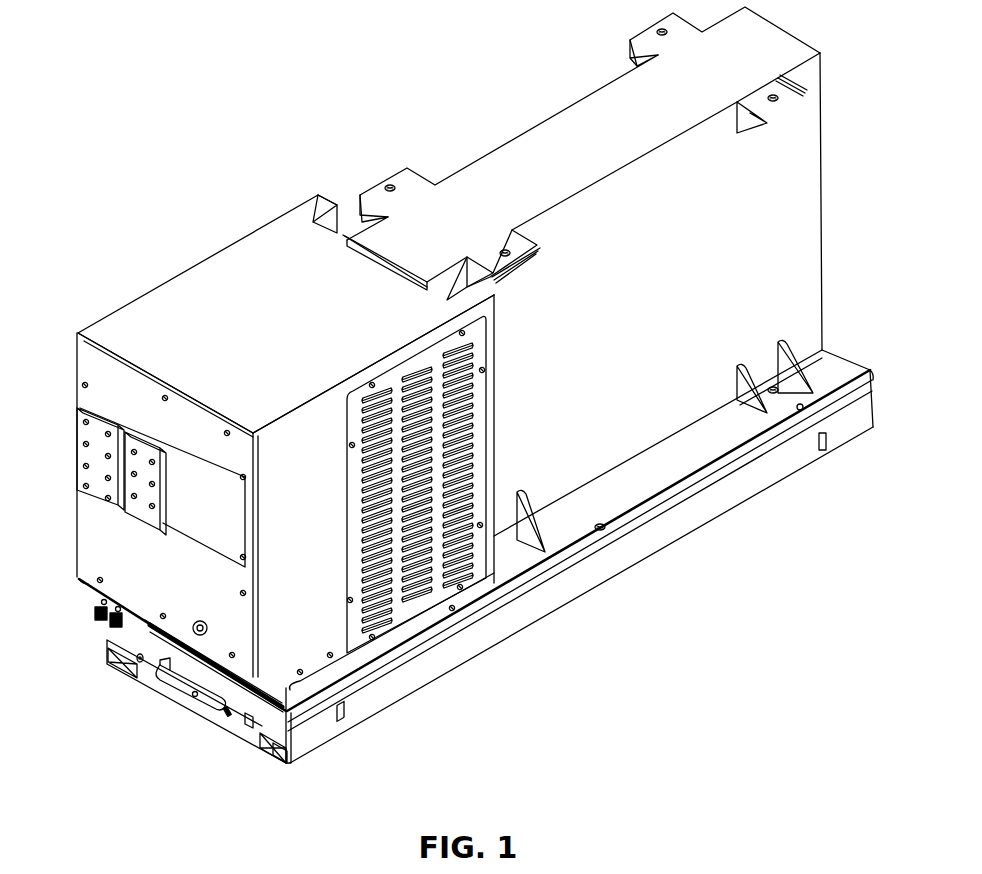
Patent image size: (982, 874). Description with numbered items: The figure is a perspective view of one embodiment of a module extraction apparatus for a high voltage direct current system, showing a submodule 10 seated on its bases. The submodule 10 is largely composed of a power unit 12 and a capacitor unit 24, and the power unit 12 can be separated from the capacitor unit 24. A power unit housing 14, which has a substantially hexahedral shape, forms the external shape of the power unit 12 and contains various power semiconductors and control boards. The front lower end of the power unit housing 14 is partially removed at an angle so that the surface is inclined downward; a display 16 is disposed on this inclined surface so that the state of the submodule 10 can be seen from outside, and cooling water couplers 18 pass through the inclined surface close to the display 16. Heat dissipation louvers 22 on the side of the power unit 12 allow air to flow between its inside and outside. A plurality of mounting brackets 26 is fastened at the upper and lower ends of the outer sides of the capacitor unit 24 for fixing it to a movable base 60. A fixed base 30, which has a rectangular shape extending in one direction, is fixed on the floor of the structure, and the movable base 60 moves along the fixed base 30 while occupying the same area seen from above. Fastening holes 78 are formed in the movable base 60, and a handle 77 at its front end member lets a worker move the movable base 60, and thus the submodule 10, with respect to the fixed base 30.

The submodule 10 is at (397, 104).
The power unit 12 is at (305, 222).
The power unit housing 14 is at (165, 305).
The display 16 is at (273, 752).
The cooling water couplers 18 is at (112, 630).
The heat dissipation louvers 22 is at (465, 586).
The capacitor unit 24 is at (448, 186).
The mounting brackets 26 is at (800, 410).
The fixed base 30 is at (430, 692).
The movable base 60 is at (231, 714).
The handle 77 is at (182, 686).
The fastening holes 78 is at (136, 666).